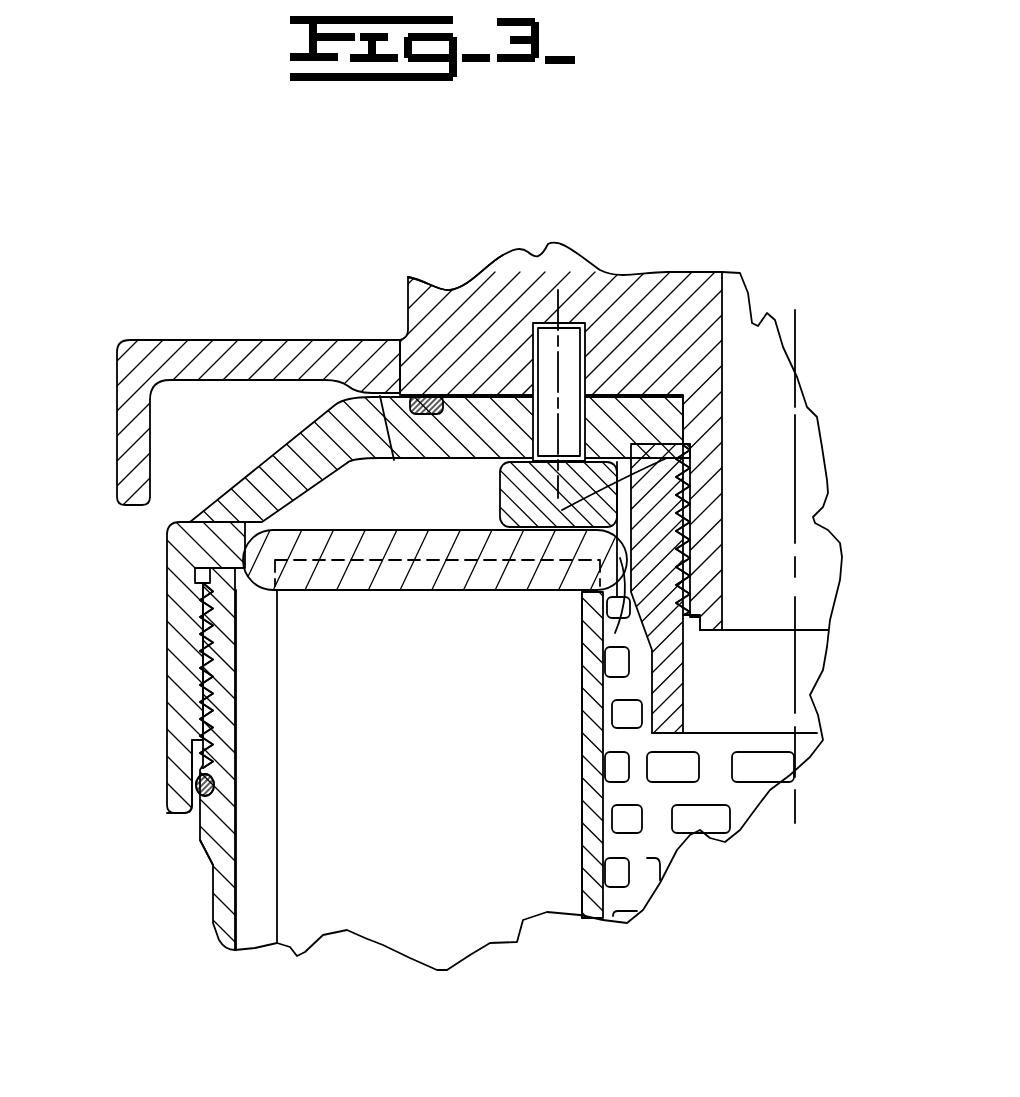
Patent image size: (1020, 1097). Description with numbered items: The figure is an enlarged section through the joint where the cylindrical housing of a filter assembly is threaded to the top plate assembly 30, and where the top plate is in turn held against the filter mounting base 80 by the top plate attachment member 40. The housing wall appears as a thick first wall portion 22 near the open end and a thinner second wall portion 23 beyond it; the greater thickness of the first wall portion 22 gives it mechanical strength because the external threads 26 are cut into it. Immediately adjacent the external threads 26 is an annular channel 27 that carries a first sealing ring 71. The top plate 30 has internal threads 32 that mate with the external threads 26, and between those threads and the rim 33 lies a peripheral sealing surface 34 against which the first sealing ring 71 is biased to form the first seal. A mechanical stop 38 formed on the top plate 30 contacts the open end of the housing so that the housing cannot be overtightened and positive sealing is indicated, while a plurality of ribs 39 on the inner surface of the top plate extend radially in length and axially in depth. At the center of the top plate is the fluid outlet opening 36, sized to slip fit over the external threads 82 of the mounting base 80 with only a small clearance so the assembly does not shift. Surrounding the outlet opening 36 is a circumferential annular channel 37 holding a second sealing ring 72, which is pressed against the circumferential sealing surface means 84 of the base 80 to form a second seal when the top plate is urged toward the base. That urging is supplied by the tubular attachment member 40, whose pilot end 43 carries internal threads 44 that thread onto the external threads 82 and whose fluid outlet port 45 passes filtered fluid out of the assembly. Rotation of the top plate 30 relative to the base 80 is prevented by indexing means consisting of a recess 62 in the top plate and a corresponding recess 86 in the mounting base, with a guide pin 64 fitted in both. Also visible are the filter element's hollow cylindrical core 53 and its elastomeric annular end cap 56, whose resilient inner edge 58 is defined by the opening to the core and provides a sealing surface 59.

The first wall portion 22 is at (215, 893).
The second wall portion 23 is at (180, 733).
The external threads 26 is at (233, 672).
The annular channel 27 is at (196, 790).
The top plate assembly 30 is at (281, 550).
The internal threads 32 is at (582, 595).
The rim 33 is at (190, 813).
The peripheral sealing surface 34 is at (215, 805).
The fluid outlet opening 36 is at (700, 417).
The circumferential annular channel 37 is at (433, 395).
The mechanical stop 38 is at (210, 600).
The ribs 39 is at (690, 440).
The top plate attachment member 40 is at (733, 700).
The pilot end 43 is at (667, 458).
The internal threads 44 is at (672, 510).
The fluid outlet port 45 is at (735, 757).
The hollow cylindrical core 53 is at (217, 672).
The annular end cap 56 is at (200, 522).
The resilient inner edge 58 is at (630, 600).
The sealing surface 59 is at (672, 545).
The recess 62 is at (505, 470).
The guide pin 64 is at (573, 343).
The first sealing ring 71 is at (214, 787).
The second sealing ring 72 is at (430, 414).
The filter mounting base 80 is at (680, 307).
The external threads 82 is at (650, 520).
The circumferential sealing surface means 84 is at (396, 465).
The recess 86 is at (527, 390).